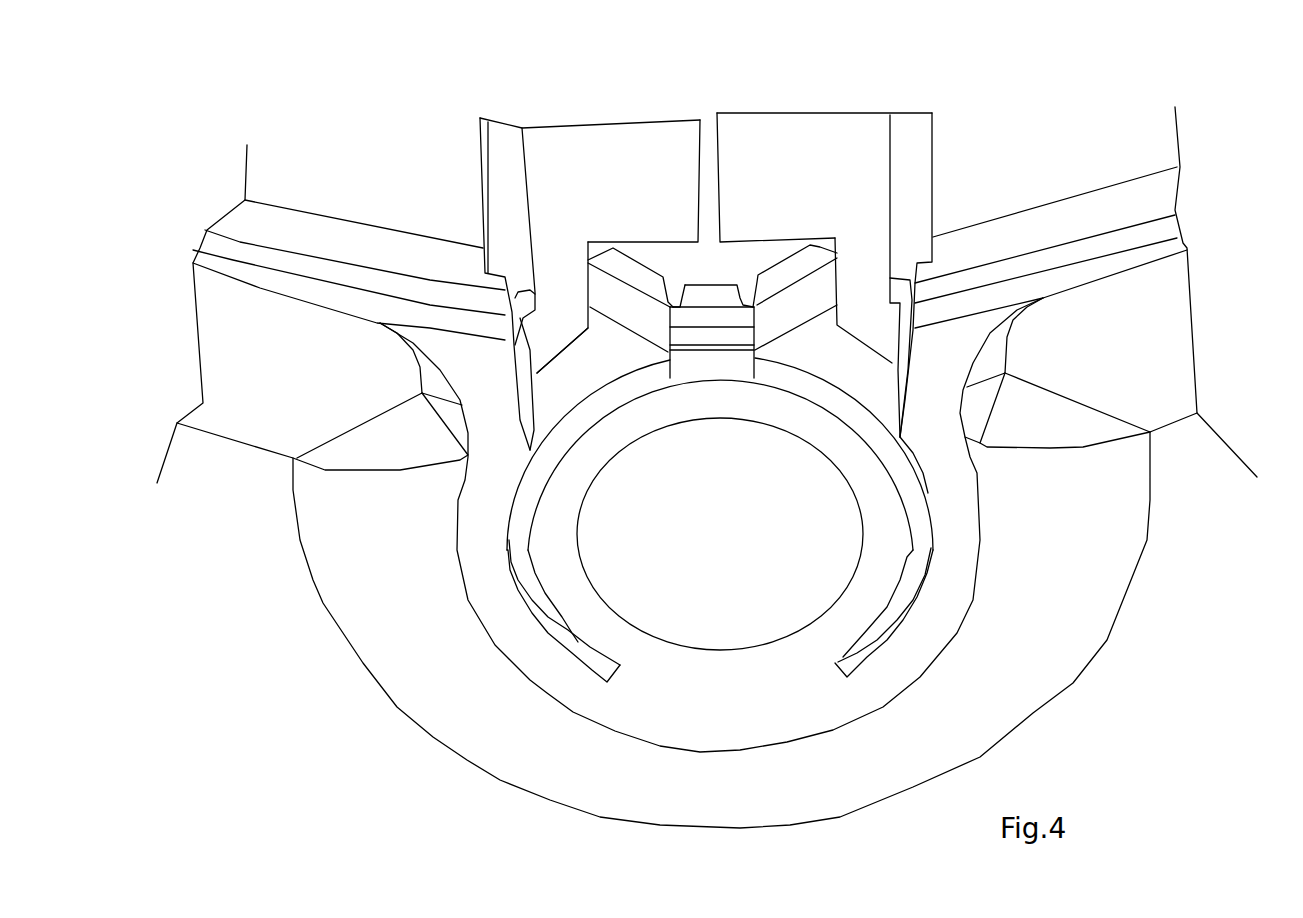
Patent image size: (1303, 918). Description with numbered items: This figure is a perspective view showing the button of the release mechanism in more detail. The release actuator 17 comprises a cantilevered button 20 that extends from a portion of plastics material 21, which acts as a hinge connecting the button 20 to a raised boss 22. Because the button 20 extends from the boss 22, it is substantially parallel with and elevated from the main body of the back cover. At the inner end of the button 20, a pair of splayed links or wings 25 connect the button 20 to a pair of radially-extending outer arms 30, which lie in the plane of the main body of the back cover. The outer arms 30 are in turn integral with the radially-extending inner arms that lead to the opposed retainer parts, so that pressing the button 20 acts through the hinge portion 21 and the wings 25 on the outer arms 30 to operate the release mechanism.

The release actuator 17 is at (659, 577).
The cantilevered button 20 is at (839, 534).
The portion of plastics material 21 is at (711, 540).
The raised boss 22 is at (707, 467).
The splayed links or wings 25 is at (736, 255).
The outer arms 30 is at (728, 264).